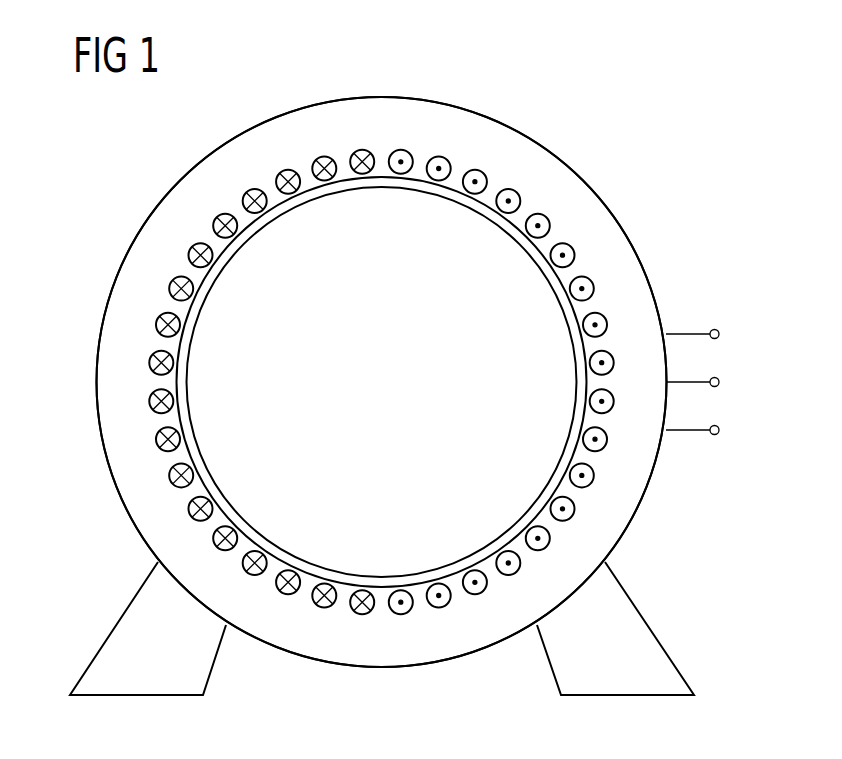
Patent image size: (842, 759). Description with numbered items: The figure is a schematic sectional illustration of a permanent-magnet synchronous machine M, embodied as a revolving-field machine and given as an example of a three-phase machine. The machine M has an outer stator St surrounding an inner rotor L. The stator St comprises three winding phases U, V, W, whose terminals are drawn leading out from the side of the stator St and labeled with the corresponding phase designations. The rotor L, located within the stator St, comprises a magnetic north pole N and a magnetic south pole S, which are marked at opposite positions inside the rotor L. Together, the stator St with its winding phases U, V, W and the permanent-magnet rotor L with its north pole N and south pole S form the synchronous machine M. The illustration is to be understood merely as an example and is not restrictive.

The permanent-magnet synchronous machine M is at (621, 167).
The stator St is at (390, 104).
The rotor L is at (453, 212).
The south pole S is at (383, 234).
The north pole N is at (385, 532).
The winding phase U is at (708, 336).
The winding phase V is at (708, 384).
The winding phase W is at (711, 432).